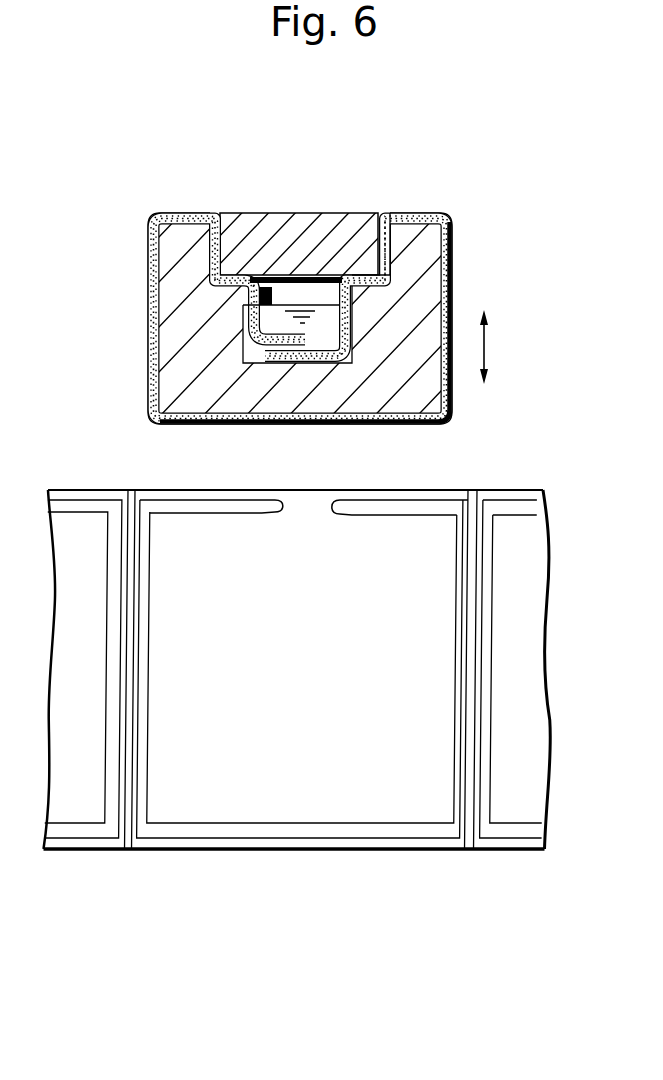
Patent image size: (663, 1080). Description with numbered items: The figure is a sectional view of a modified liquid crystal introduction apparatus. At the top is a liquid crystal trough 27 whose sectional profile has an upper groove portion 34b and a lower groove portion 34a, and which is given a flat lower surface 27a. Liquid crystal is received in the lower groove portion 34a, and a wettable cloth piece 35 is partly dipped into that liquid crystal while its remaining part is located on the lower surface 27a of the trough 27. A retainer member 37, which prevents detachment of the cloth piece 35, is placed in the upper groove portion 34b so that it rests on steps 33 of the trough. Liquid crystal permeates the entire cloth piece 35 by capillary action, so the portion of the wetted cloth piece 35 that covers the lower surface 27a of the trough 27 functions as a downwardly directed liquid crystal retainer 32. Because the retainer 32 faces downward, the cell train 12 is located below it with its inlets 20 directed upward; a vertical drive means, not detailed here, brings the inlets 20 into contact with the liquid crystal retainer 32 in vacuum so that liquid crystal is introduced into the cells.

The cell train 12 is at (449, 491).
The inlets 20 is at (298, 510).
The liquid crystal trough 27 is at (452, 246).
The lower surface 27a is at (213, 423).
The liquid crystal retainer 32 is at (328, 434).
The steps 33 is at (229, 278).
The lower groove portion 34a is at (343, 329).
The upper groove portion 34b is at (386, 248).
The wettable cloth piece 35 is at (150, 280).
The retainer member 37 is at (300, 213).